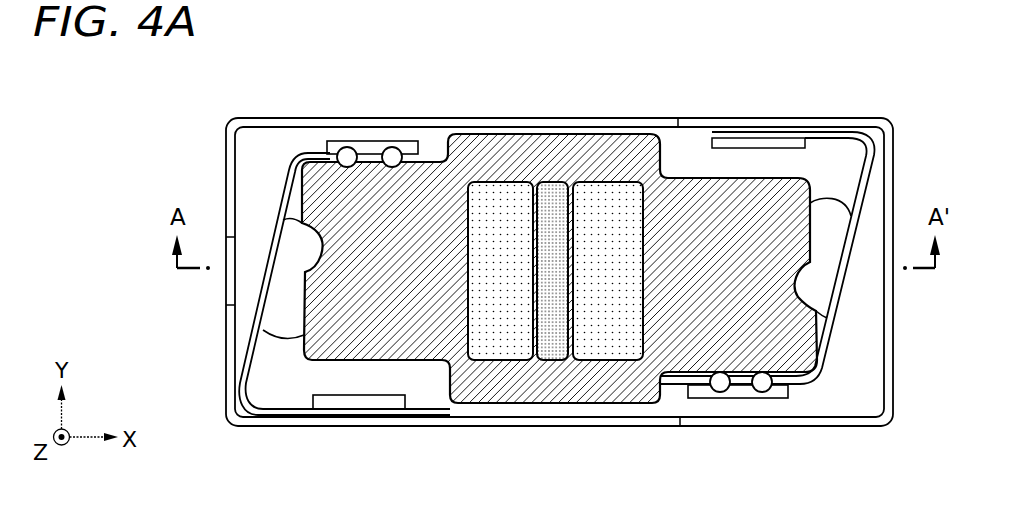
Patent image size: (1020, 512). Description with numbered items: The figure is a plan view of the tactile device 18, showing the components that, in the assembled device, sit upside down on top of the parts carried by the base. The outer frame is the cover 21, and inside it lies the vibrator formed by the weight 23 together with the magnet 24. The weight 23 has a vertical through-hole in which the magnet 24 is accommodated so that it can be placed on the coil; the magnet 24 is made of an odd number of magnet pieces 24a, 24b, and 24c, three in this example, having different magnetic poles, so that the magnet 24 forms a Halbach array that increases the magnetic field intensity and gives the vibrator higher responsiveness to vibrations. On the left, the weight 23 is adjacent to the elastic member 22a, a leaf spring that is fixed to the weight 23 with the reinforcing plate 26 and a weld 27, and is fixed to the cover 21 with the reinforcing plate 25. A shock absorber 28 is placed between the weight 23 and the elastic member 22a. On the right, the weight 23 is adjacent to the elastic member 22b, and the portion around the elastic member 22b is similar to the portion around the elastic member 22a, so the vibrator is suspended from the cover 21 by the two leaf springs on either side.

The tactile device 18 is at (270, 68).
The cover 21 is at (306, 117).
The elastic member 22a is at (251, 414).
The elastic member 22b is at (870, 128).
The weight 23 is at (488, 142).
The magnet 24 is at (552, 183).
The magnet piece 24a is at (487, 360).
The magnet piece 24b is at (553, 360).
The magnet piece 24c is at (625, 360).
The reinforcing plate 25 is at (390, 409).
The reinforcing plate 26 is at (360, 141).
The weld 27 is at (396, 147).
The shock absorber 28 is at (283, 340).